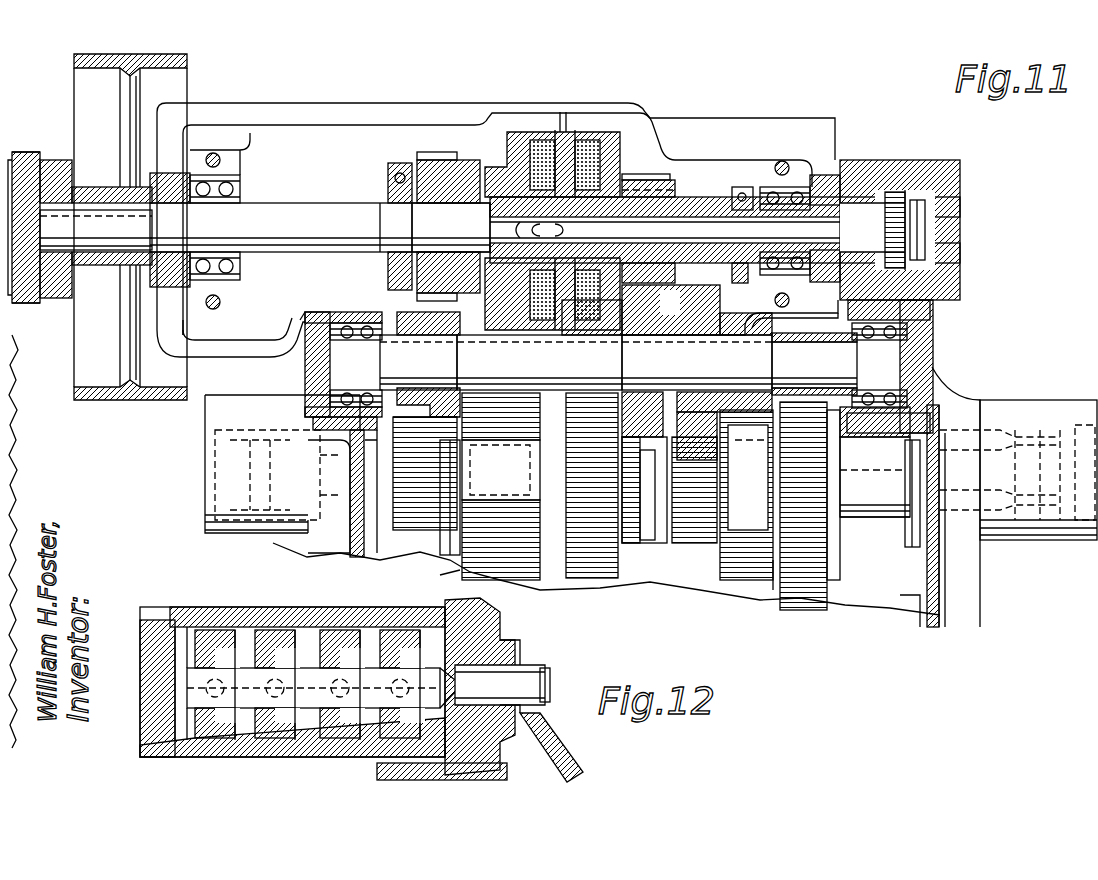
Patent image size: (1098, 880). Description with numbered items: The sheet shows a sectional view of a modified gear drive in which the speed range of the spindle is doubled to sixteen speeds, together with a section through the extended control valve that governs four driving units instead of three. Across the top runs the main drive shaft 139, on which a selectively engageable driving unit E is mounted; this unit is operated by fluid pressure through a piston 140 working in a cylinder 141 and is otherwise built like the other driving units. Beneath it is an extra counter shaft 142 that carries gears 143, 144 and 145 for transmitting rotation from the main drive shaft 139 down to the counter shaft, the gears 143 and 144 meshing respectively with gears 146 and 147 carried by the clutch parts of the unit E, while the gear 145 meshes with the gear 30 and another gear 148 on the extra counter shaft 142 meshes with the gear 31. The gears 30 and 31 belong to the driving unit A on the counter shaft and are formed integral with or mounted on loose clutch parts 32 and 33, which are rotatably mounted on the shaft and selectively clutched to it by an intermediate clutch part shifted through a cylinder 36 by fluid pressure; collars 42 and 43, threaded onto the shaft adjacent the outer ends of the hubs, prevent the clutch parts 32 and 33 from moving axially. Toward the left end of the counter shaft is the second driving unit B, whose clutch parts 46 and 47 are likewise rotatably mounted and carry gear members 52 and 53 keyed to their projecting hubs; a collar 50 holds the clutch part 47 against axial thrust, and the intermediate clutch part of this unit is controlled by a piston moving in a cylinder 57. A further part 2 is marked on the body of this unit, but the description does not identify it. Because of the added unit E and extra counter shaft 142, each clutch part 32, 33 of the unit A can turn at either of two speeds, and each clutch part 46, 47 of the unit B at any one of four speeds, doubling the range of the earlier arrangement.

The gear 2 is at (501, 446).
The gear 30 is at (700, 540).
The gear 31 is at (800, 602).
The clutch part 32 is at (730, 582).
The clutch part 33 is at (835, 555).
The cylinder 36 is at (1030, 432).
The collar 42 is at (655, 543).
The collar 43 is at (905, 505).
The clutch part 46 is at (455, 556).
The clutch part 47 is at (530, 578).
The collar 50 is at (630, 540).
The gear member 52 is at (425, 517).
The gear member 53 is at (595, 567).
The cylinder 57 is at (268, 515).
The main drive shaft 139 is at (445, 212).
The piston 140 is at (900, 190).
The cylinder 141 is at (935, 195).
The extra counter shaft 142 is at (920, 352).
The gear 143 is at (448, 335).
The gear 144 is at (618, 336).
The gear 145 is at (690, 315).
The gear 146 is at (427, 158).
The gear 147 is at (652, 176).
The gear 148 is at (800, 394).
The driving unit A is at (762, 582).
The driving unit B is at (450, 574).
The driving unit E is at (563, 128).